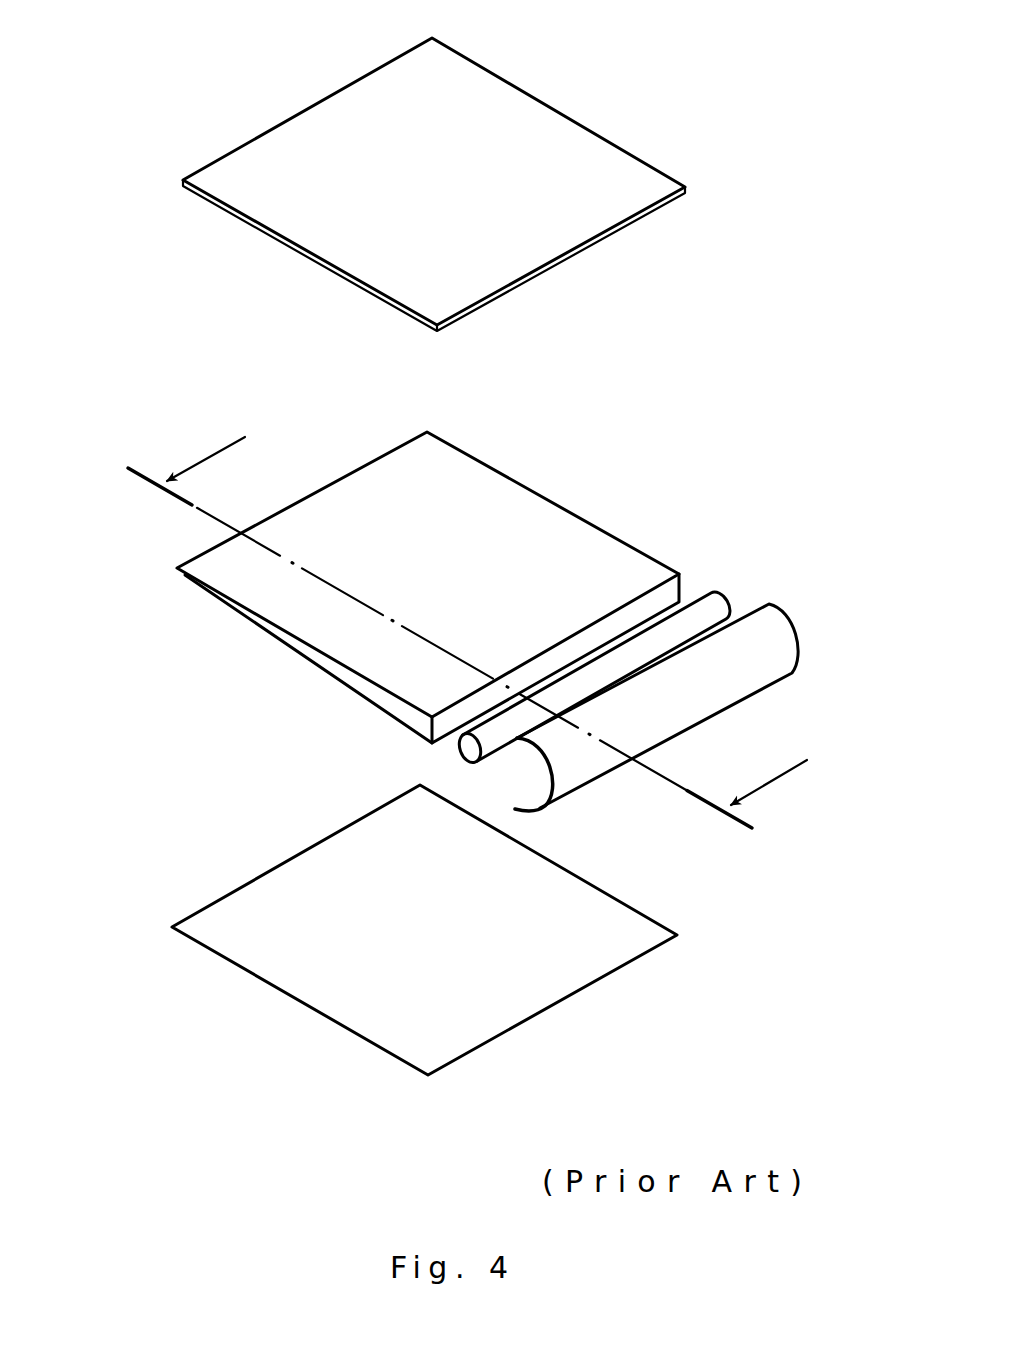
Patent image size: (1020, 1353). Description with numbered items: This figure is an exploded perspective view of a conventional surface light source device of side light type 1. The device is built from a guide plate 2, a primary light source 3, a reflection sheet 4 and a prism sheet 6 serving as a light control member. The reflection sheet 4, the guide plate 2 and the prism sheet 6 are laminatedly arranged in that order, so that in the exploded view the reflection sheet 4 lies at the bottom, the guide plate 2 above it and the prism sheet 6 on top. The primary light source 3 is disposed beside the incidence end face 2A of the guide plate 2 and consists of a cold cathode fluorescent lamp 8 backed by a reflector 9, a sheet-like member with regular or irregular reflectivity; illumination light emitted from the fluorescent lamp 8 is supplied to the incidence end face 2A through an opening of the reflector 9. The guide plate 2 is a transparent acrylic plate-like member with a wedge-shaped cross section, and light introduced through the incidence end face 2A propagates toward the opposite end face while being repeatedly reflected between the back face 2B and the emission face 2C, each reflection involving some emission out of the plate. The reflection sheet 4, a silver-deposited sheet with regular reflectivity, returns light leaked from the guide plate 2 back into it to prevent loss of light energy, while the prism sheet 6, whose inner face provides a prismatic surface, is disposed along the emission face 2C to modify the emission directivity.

The surface light source device of side light type 1 is at (427, 628).
The guide plate 2 is at (413, 594).
The incidence end face 2A is at (553, 653).
The back face 2B is at (283, 670).
The emission face 2C is at (483, 492).
The primary light source 3 is at (556, 650).
The reflection sheet 4 is at (483, 1018).
The prism sheet 6 is at (647, 185).
The cold cathode lamp (fluorescent lamp) 8 is at (497, 738).
The reflector 9 is at (735, 680).